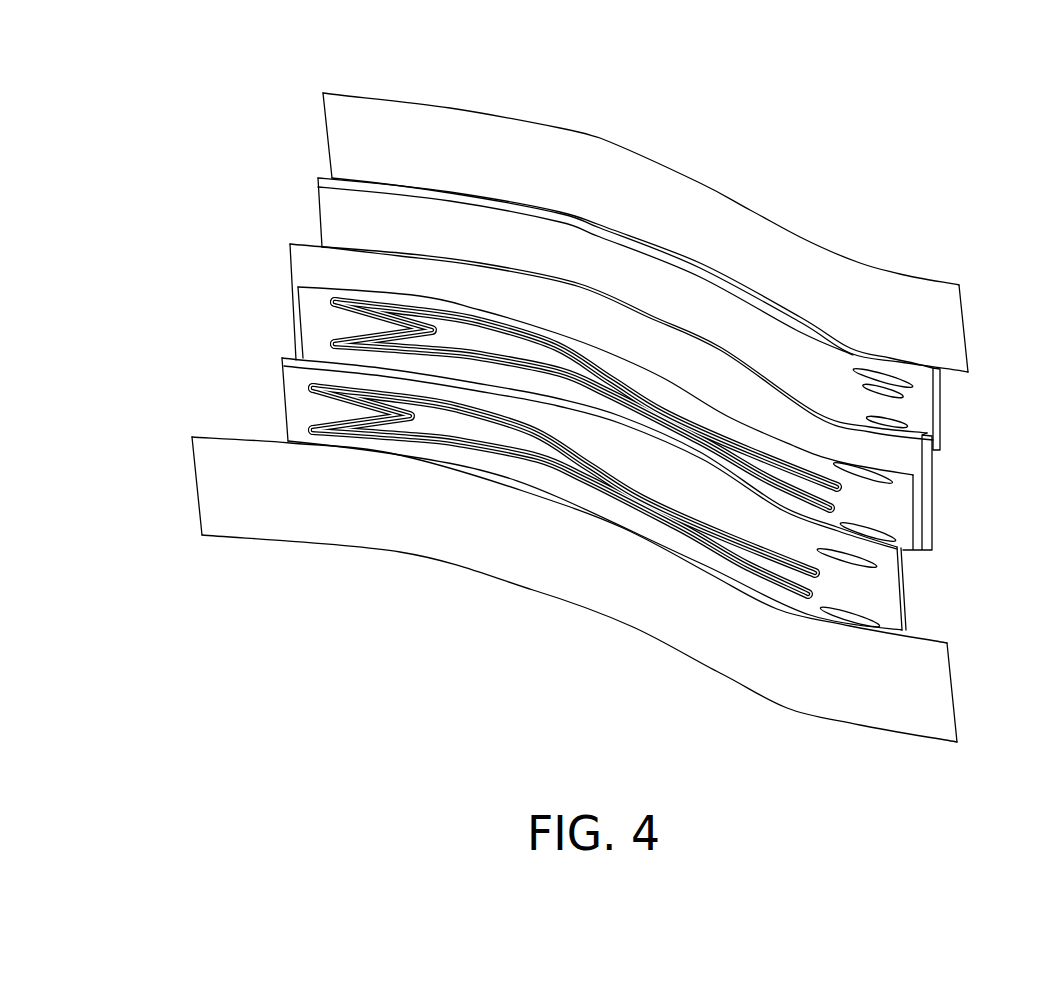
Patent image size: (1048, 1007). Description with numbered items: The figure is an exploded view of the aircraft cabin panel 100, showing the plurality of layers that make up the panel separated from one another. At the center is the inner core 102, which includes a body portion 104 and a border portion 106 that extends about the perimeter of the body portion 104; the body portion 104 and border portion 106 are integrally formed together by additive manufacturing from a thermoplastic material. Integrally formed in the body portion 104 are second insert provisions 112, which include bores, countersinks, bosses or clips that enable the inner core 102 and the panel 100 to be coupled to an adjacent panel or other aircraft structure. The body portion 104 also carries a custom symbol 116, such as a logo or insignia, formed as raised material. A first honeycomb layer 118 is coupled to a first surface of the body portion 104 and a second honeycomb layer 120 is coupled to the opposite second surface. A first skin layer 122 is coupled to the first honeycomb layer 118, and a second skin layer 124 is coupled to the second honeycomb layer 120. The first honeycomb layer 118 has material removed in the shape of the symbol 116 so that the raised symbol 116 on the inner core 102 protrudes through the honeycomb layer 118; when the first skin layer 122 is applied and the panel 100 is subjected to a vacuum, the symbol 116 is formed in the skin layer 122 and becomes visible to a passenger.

The aircraft cabin panel 100 is at (203, 118).
The inner core 102 is at (250, 266).
The body portion 104 is at (892, 515).
The border portion 106 is at (923, 480).
The second insert provisions 112 is at (900, 537).
The custom symbol 116 is at (300, 345).
The first honeycomb layer 118 is at (903, 593).
The second honeycomb layer 120 is at (924, 408).
The first skin layer 122 is at (935, 728).
The second skin layer 124 is at (945, 325).